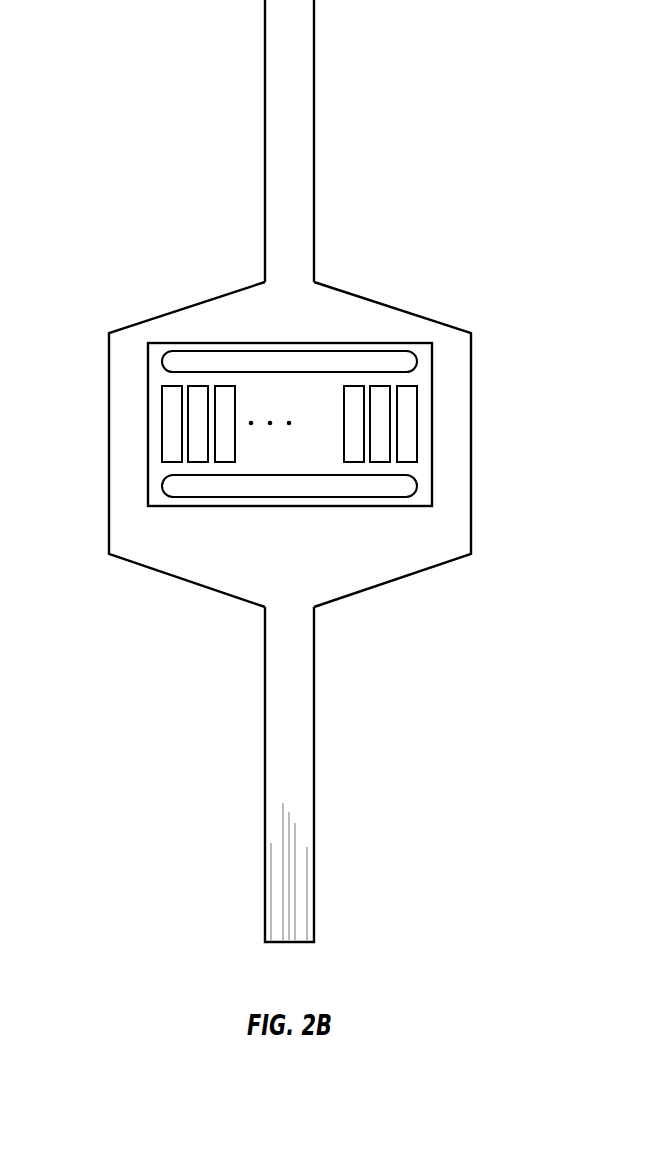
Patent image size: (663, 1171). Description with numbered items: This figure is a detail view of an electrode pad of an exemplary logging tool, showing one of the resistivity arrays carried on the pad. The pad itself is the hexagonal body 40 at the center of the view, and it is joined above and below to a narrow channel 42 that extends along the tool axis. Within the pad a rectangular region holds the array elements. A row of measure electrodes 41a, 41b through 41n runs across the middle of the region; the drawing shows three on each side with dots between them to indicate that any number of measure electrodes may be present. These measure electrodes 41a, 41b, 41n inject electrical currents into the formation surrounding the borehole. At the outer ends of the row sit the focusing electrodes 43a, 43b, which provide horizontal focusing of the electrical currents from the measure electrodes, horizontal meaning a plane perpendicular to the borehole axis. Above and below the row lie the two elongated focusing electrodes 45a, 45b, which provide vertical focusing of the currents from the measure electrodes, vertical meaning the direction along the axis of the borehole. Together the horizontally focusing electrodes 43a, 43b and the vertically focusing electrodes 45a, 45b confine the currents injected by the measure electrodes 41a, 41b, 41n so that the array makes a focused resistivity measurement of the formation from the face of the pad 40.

The sensor body / chamber 40 is at (348, 292).
The channel 42 is at (315, 162).
The measure electrode 41a is at (202, 405).
The measure electrode 41b is at (222, 450).
The measure electrode 41n is at (377, 405).
The focusing electrode 43a is at (173, 416).
The focusing electrode 43b is at (405, 424).
The focusing electrode 45a is at (241, 343).
The focusing electrode 45b is at (407, 488).